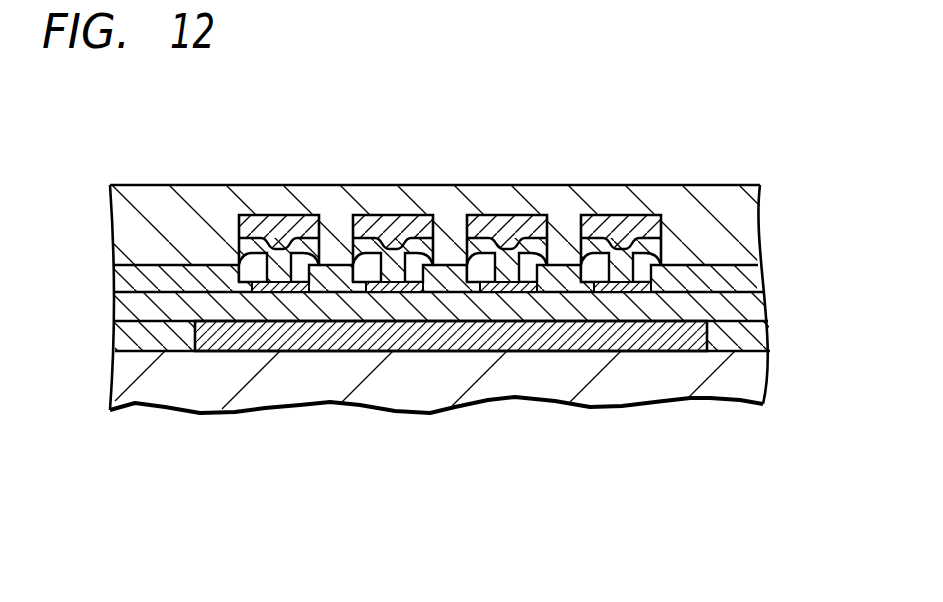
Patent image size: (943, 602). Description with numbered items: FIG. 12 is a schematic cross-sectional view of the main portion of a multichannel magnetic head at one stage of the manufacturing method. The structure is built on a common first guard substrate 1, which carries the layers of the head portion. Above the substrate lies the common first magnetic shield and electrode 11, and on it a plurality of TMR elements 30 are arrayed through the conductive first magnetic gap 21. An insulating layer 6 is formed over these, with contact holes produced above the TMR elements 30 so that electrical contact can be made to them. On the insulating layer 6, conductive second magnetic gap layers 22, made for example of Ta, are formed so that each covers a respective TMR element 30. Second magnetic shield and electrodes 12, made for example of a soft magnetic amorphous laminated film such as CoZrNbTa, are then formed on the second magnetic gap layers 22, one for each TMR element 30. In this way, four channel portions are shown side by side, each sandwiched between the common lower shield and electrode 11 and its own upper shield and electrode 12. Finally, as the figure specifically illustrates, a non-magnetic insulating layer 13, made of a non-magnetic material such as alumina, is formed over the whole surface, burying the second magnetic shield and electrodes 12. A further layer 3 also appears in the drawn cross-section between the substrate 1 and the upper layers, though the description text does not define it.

The first guard substrate 1 is at (678, 377).
The insulating film 3 is at (748, 335).
The insulating layer 6 is at (743, 277).
The first magnetic shield and electrode 11 is at (543, 338).
The second magnetic shield and electrode 12 is at (265, 213).
The non-magnetic insulating layer 13 is at (565, 185).
The first magnetic gap 21 is at (582, 310).
The second magnetic gap layer 22 is at (304, 238).
The TMR element 30 is at (276, 288).